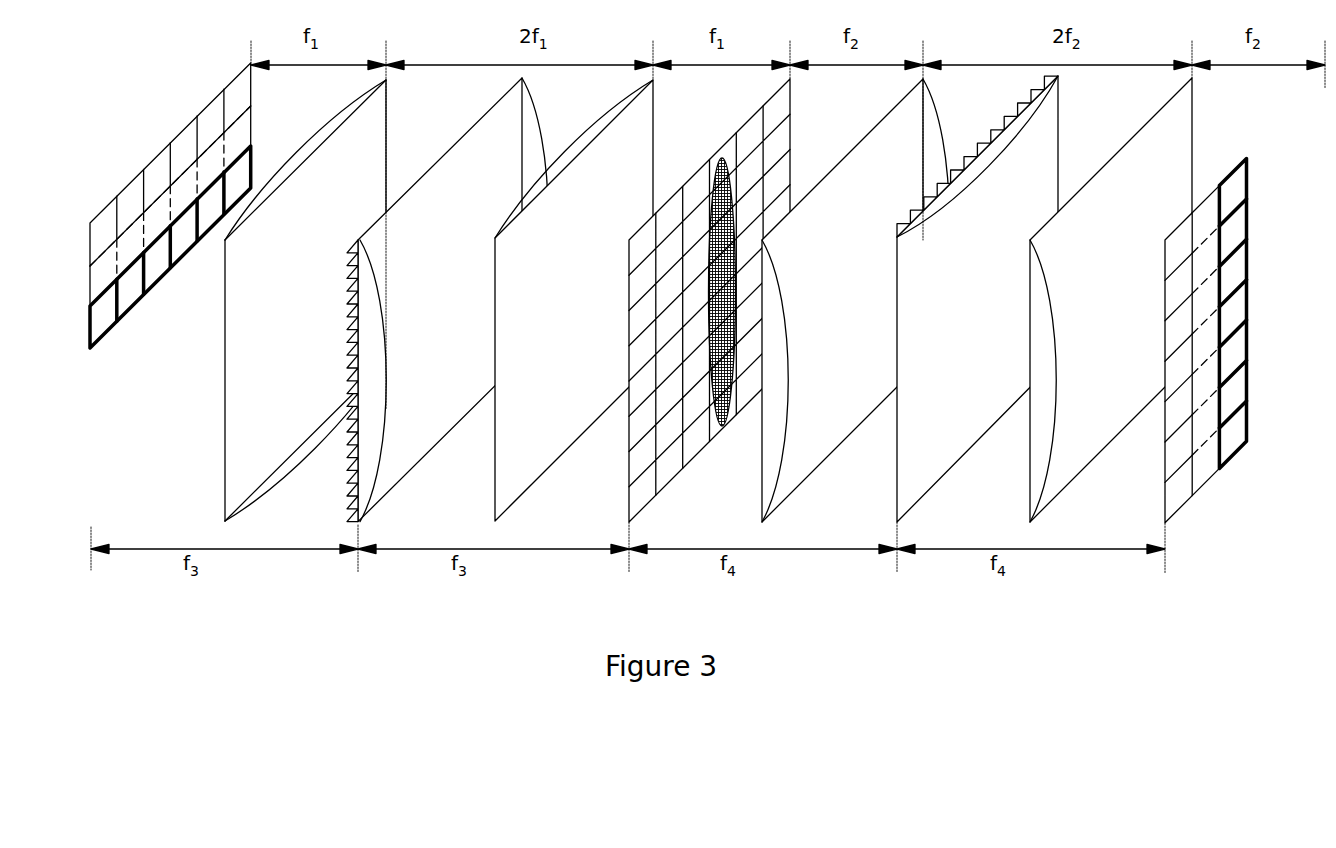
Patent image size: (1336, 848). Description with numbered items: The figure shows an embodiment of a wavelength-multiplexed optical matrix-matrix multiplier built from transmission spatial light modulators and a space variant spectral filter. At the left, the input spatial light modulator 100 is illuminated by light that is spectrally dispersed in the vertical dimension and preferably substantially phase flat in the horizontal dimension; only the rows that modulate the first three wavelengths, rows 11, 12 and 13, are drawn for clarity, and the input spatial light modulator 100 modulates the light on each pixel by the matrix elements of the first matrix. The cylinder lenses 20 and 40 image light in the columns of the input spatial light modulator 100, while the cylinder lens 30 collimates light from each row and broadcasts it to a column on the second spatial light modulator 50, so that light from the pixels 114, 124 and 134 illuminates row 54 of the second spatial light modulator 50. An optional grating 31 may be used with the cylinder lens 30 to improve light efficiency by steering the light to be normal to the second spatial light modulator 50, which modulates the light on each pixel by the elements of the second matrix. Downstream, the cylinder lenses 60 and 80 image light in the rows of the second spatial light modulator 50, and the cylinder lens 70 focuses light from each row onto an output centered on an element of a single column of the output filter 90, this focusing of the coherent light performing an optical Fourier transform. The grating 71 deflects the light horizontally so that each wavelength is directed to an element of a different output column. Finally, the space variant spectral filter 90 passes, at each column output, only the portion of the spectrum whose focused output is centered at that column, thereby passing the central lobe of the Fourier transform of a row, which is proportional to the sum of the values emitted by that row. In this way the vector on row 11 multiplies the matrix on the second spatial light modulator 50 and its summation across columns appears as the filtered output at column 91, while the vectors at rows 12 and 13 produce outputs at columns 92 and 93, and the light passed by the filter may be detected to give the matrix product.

The input spatial light modulator 100 is at (204, 192).
The first wavelength row 11 is at (251, 90).
The second wavelength row 12 is at (251, 118).
The third wavelength row 13 is at (251, 145).
The pixel 114 is at (157, 170).
The pixel 124 is at (155, 210).
The pixel 134 is at (157, 265).
The cylinder lens 20 is at (268, 500).
The cylinder lens 30 is at (426, 306).
The grating 31 is at (345, 520).
The cylinder lens 40 is at (537, 480).
The second spatial light modulator 50 is at (709, 306).
The row 54 is at (723, 427).
The cylinder lens 60 is at (802, 482).
The cylinder lens 70 is at (977, 304).
The grating 71 is at (991, 130).
The cylinder lens 80 is at (1072, 480).
The space variant spectral filter 90 is at (1218, 348).
The output column 91 is at (1182, 508).
The output column 92 is at (1208, 481).
The output column 93 is at (1233, 457).